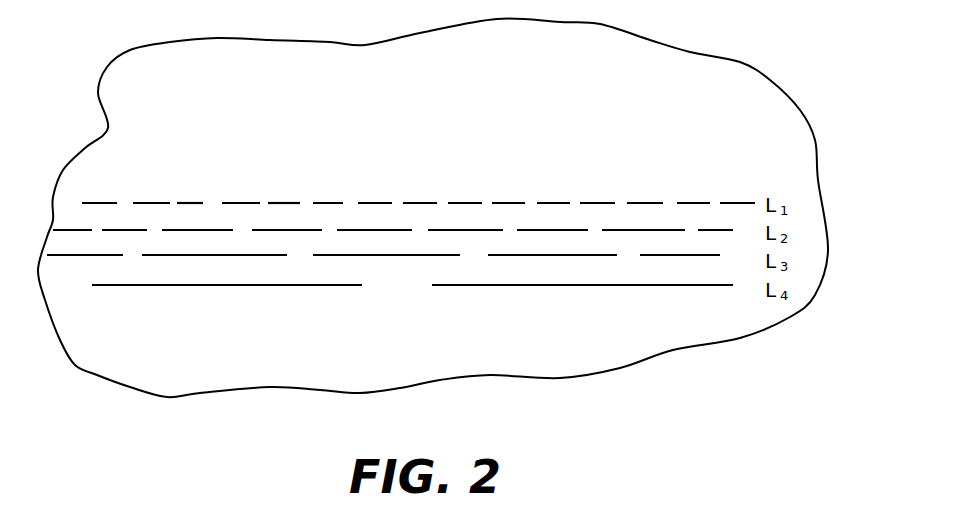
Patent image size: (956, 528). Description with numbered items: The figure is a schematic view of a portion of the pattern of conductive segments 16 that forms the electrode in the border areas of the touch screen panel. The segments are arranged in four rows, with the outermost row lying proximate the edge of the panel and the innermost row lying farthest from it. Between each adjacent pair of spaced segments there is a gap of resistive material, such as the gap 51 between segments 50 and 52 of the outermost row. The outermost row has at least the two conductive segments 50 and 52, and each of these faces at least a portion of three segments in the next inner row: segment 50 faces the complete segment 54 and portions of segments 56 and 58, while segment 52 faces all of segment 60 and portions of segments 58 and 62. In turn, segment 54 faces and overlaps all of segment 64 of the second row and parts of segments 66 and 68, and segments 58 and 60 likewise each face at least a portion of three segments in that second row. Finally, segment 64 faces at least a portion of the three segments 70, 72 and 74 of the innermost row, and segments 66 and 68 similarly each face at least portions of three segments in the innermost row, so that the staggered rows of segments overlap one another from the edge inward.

The conductive segments 16 is at (440, 90).
The segment 50 is at (263, 285).
The gap 51 is at (395, 285).
The segment 52 is at (503, 285).
The segment 54 is at (195, 255).
The segment 56 is at (82, 255).
The segment 58 is at (337, 255).
The segment 60 is at (558, 257).
The segment 62 is at (667, 257).
The segment 64 is at (221, 230).
The segment 66 is at (138, 230).
The segment 68 is at (307, 230).
The segment 70 is at (193, 203).
The segment 72 is at (235, 203).
The segment 74 is at (287, 203).